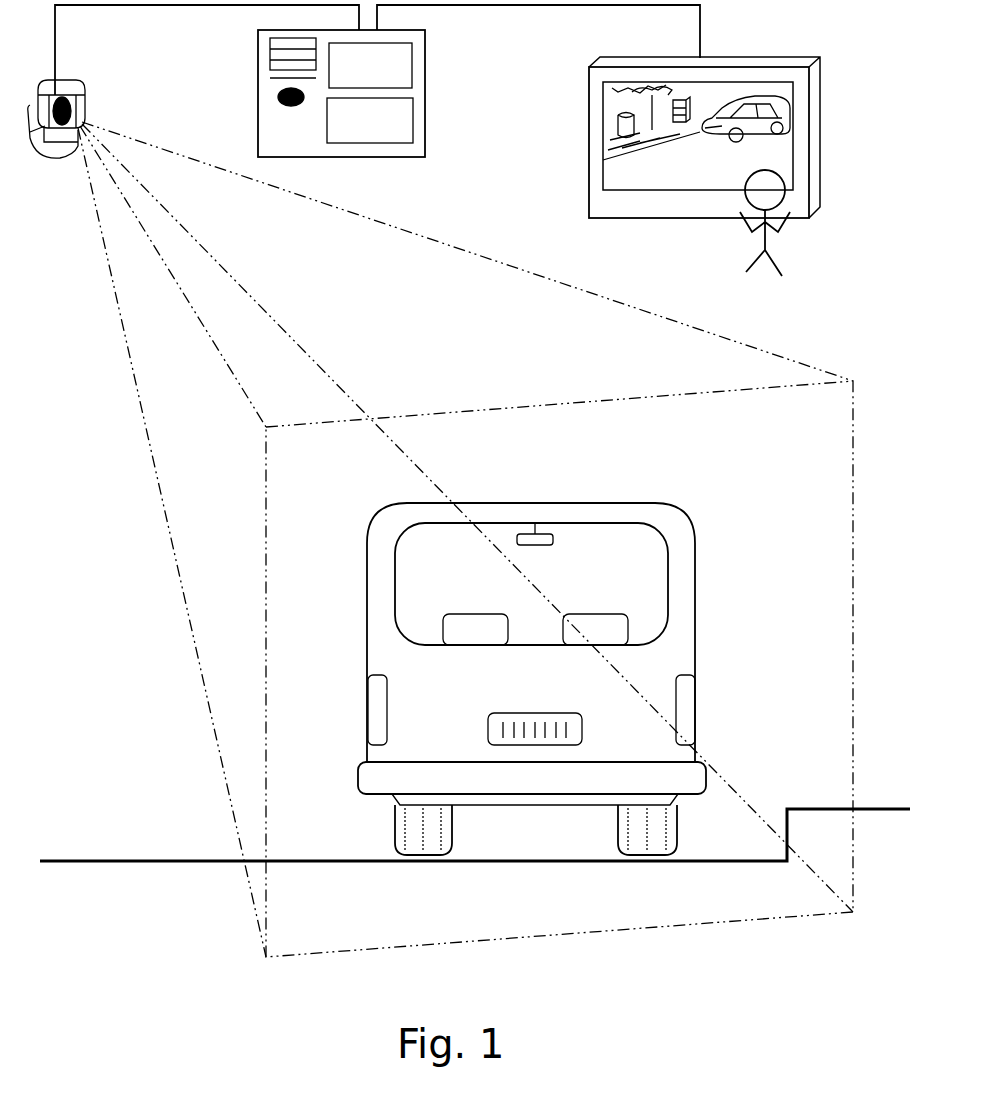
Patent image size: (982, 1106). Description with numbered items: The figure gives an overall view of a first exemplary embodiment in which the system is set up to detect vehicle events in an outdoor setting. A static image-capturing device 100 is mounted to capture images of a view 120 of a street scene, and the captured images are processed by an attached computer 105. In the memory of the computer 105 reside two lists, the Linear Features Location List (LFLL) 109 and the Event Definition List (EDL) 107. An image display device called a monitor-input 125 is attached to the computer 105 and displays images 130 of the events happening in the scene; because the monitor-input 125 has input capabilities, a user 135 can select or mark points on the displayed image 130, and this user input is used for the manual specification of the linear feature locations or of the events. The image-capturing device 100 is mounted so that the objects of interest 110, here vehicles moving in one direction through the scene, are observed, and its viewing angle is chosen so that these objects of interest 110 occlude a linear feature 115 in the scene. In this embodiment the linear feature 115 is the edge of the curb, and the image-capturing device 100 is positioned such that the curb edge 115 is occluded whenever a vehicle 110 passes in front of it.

The static image-capturing device 100 is at (75, 96).
The computer 105 is at (258, 72).
The Event Definition List (EDL) 107 is at (403, 70).
The Linear Features Location List (LFLL) 109 is at (407, 134).
The objects of interest (vehicles) 110 is at (682, 520).
The linear feature (edge of the curb) 115 is at (790, 808).
The view 120 is at (689, 925).
The monitor-input 125 is at (589, 180).
The displayed image 130 is at (665, 172).
The user 135 is at (747, 270).